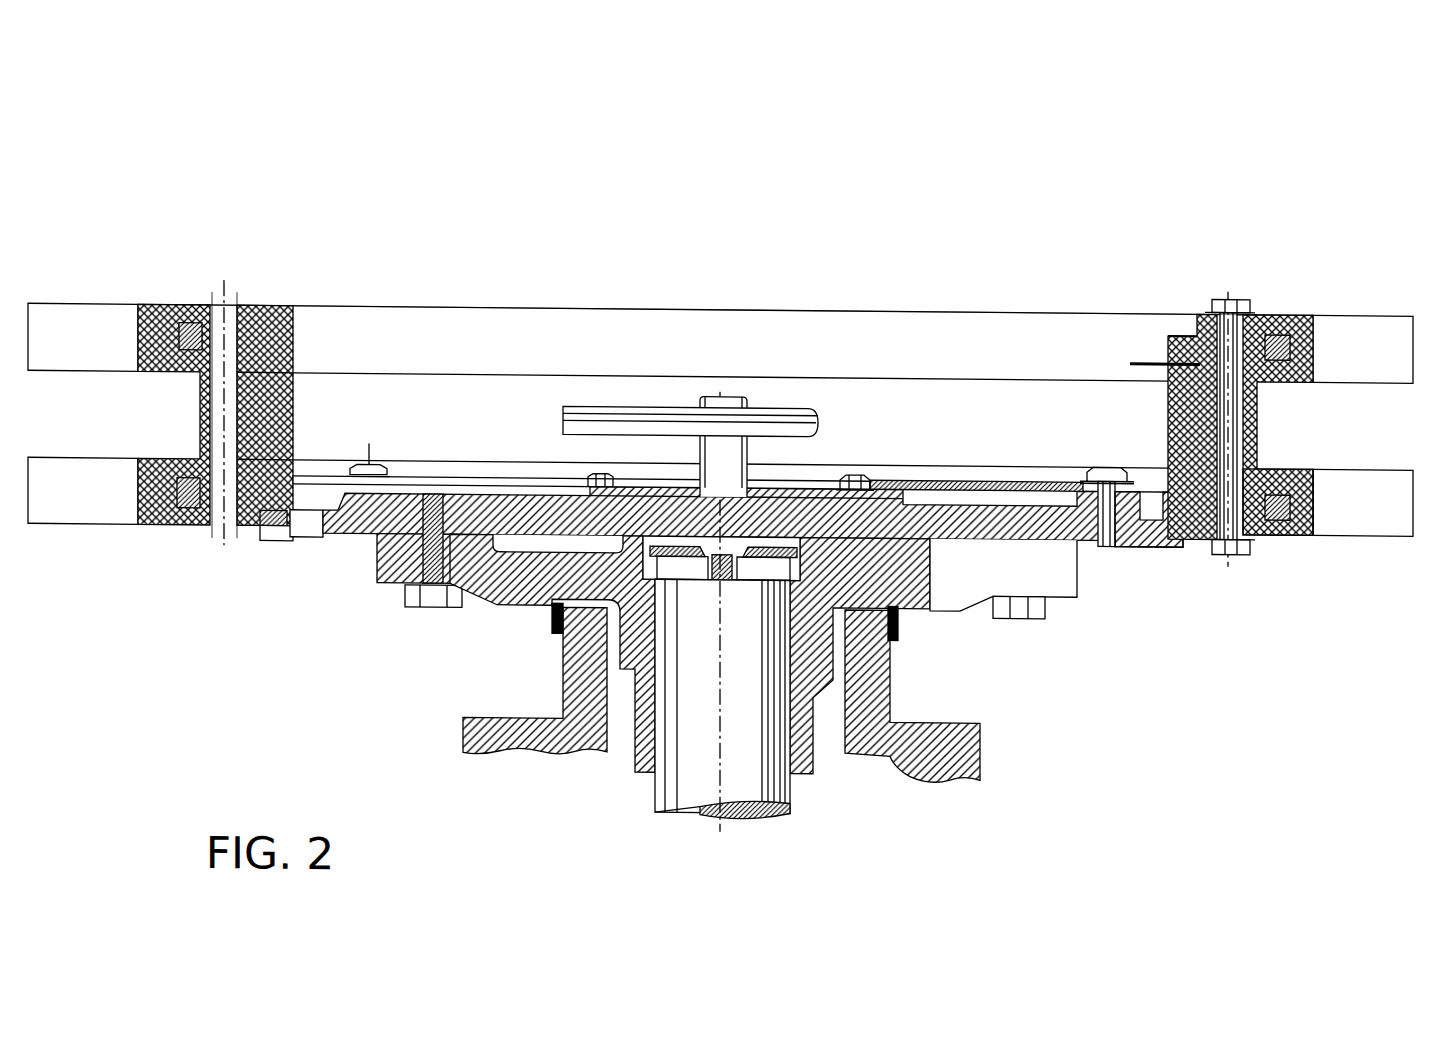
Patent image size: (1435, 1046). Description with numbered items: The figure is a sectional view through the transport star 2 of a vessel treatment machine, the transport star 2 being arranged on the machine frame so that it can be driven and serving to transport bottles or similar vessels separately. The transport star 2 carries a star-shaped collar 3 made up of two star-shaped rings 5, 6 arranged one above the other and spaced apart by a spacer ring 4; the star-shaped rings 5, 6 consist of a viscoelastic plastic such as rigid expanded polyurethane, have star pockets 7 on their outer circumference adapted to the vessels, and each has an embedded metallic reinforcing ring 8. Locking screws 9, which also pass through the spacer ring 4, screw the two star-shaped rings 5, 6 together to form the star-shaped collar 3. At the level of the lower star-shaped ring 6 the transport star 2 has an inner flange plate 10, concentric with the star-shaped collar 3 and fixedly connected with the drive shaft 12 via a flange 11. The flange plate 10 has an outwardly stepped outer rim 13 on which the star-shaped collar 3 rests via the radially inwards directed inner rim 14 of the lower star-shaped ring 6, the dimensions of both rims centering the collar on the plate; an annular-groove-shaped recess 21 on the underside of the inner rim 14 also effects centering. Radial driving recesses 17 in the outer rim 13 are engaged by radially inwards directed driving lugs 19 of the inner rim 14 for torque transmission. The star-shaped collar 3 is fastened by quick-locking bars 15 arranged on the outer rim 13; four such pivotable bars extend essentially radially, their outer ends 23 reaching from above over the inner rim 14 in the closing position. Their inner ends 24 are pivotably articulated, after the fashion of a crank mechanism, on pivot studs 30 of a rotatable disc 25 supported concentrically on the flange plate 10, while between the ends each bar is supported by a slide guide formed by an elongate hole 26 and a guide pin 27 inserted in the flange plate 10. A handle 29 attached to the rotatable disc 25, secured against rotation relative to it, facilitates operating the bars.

The transport star 2 is at (1105, 252).
The star-shaped collar 3 is at (1273, 374).
The spacer ring 4 is at (1228, 280).
The star-shaped ring 5 is at (1295, 320).
The star-shaped ring 6 is at (1302, 533).
The star pockets 7 is at (1358, 317).
The metallic reinforcing ring 8 is at (1312, 452).
The locking screws 9 is at (1262, 408).
The inner flange plate 10 is at (963, 527).
The flange 11 is at (866, 556).
The drive shaft 12 is at (700, 659).
The outer rim 13 is at (1170, 538).
The inner rim 14 is at (1275, 537).
The quick-locking bars 15 is at (437, 478).
The driving recesses 17 is at (308, 510).
The driving lugs 19 is at (283, 526).
The recess 21 is at (1215, 540).
The outer ends 23 is at (1172, 320).
The inner ends 24 is at (890, 471).
The rotatable disc 25 is at (763, 482).
The elongate hole 26 is at (1105, 455).
The guide pin 27 is at (1132, 538).
The handle 29 is at (650, 401).
The pivot studs 30 is at (853, 466).